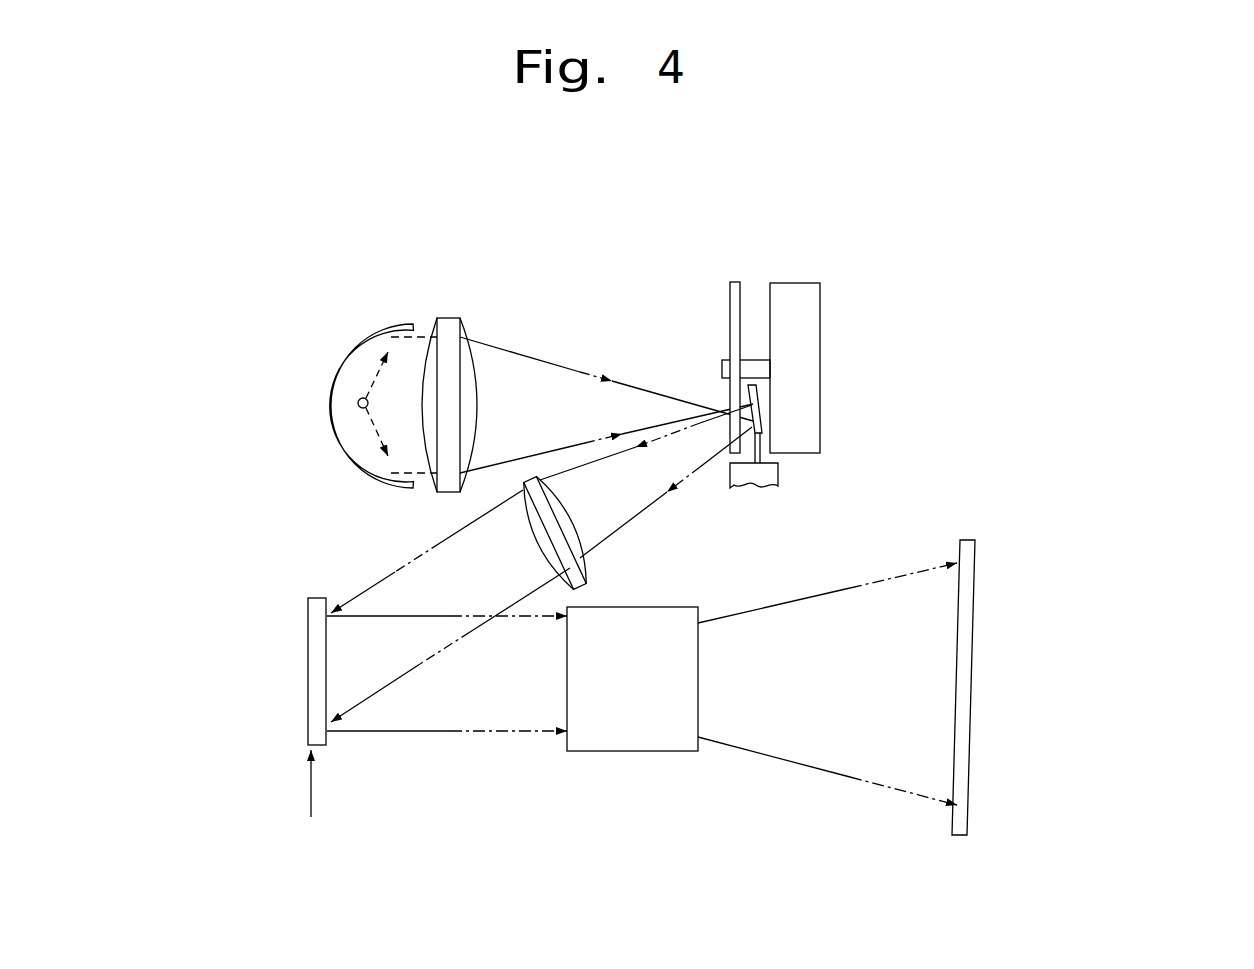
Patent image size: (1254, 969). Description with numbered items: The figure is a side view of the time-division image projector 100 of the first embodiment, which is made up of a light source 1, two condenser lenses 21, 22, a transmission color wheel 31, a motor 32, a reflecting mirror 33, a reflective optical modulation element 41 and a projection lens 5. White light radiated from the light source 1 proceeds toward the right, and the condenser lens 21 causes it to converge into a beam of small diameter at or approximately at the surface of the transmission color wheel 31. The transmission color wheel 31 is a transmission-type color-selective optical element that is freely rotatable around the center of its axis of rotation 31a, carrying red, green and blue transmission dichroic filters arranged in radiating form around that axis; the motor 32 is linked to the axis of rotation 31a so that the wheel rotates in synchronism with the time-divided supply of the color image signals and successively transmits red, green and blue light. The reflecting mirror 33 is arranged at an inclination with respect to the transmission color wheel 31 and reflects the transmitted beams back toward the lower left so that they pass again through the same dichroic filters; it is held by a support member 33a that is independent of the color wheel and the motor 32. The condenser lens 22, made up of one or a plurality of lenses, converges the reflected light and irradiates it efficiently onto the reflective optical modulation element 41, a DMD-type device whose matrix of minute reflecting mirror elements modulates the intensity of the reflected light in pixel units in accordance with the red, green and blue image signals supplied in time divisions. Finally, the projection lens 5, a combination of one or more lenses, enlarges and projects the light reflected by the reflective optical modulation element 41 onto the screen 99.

The light source 1 is at (353, 363).
The condenser lens 21 is at (448, 318).
The condenser lens 22 is at (585, 592).
The transmission color wheel 31 is at (738, 281).
The axis of rotation 31a is at (754, 367).
The motor 32 is at (820, 318).
The reflecting mirror 33 is at (748, 408).
The support member 33a is at (778, 473).
The reflective optical modulation element 41 is at (307, 663).
The projection lens 5 is at (627, 752).
The screen 99 is at (973, 687).
The time-division image projector 100 is at (935, 272).